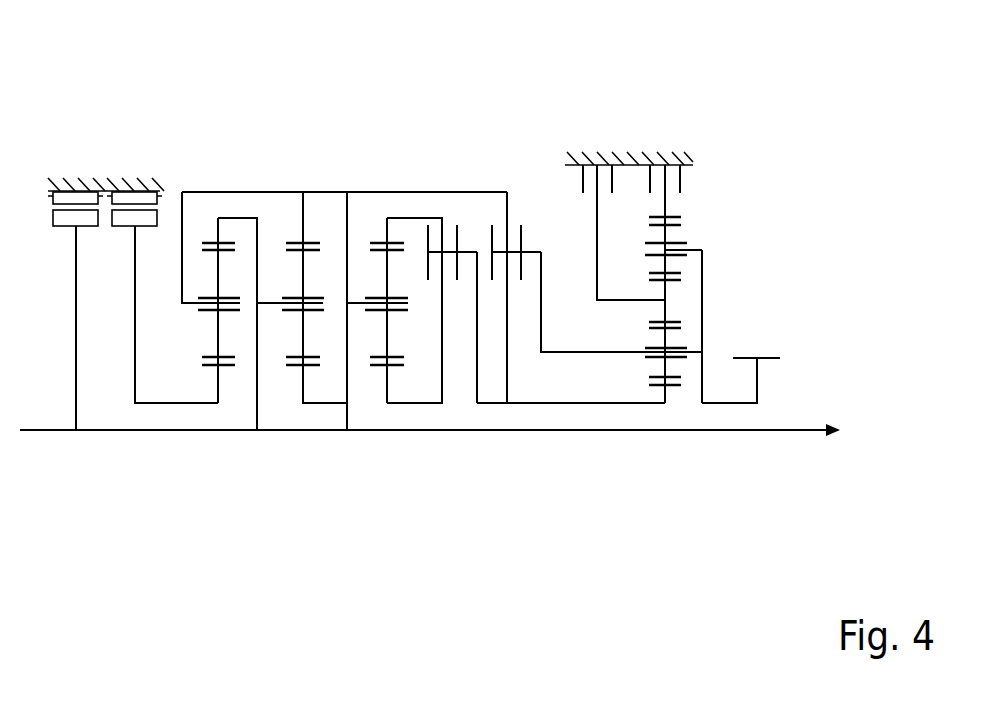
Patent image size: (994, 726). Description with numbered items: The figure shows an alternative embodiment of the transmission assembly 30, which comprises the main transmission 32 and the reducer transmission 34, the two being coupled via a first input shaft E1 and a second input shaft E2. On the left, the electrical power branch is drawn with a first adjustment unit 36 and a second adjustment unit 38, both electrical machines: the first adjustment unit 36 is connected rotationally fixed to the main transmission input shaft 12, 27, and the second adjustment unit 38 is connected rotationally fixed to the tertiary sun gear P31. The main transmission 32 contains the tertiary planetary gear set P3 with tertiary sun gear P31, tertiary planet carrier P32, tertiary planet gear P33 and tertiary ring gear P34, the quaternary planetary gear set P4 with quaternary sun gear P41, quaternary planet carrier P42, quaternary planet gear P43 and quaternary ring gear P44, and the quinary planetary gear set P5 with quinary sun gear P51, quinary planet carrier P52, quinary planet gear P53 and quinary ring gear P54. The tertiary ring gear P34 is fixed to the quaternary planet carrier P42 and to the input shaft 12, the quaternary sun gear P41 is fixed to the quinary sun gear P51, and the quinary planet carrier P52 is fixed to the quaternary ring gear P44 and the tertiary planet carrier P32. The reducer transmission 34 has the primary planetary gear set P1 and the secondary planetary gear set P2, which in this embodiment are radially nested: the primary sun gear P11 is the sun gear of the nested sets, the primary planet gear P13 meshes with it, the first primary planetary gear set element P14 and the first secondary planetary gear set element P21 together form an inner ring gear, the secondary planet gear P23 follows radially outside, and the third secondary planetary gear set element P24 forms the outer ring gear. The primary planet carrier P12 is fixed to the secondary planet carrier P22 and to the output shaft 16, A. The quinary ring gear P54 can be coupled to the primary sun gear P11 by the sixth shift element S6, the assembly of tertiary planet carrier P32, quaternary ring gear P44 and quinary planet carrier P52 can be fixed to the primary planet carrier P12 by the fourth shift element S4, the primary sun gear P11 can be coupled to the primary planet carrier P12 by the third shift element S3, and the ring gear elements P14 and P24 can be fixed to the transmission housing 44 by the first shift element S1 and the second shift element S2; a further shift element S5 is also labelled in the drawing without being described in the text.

The main transmission input shaft 12 is at (428, 529).
The drive shaft 27 is at (48, 432).
The transmission assembly 30 is at (729, 187).
The main transmission 32 is at (358, 172).
The reducer transmission 34 is at (630, 140).
The first adjustment unit 36 is at (65, 173).
The second adjustment unit 38 is at (132, 173).
The transmission housing 44 is at (597, 165).
The output shaft 16 is at (787, 381).
The output shaft of the reducer transmission A is at (765, 360).
The first input shaft E1 is at (550, 405).
The second input shaft E2 is at (538, 245).
The first shift element S1 is at (573, 180).
The second shift element S2 is at (685, 180).
The third shift element S3 is at (512, 289).
The fourth shift element S4 is at (490, 207).
The shift element S5 is at (453, 289).
The sixth shift element S6 is at (442, 207).
The primary planetary gear set P1 is at (665, 388).
The secondary planetary gear set P2 is at (666, 445).
The tertiary planetary gear set P3 is at (218, 445).
The quaternary planetary gear set P4 is at (303, 445).
The quinary planetary gear set P5 is at (387, 445).
The primary sun gear P11 is at (668, 395).
The primary planet carrier P12 is at (702, 268).
The primary planet gear P13 is at (663, 367).
The first primary planetary gear set element P14 is at (783, 327).
The first secondary planetary gear set element P21 is at (665, 290).
The second secondary planetary gear set element P22 is at (785, 297).
The secondary planet gear P23 is at (665, 232).
The third secondary planetary gear set element P24 is at (665, 208).
The tertiary sun gear P31 is at (218, 383).
The tertiary planet carrier P32 is at (192, 303).
The tertiary planet gear P33 is at (220, 335).
The tertiary ring gear P34 is at (217, 233).
The quaternary sun gear P41 is at (303, 335).
The quaternary planet carrier P42 is at (278, 305).
The quaternary planet gear P43 is at (307, 270).
The quaternary ring gear P44 is at (302, 220).
The quinary sun gear P51 is at (388, 385).
The quinary planet carrier P52 is at (357, 305).
The quinary planet gear P53 is at (388, 335).
The quinary ring gear P54 is at (385, 240).